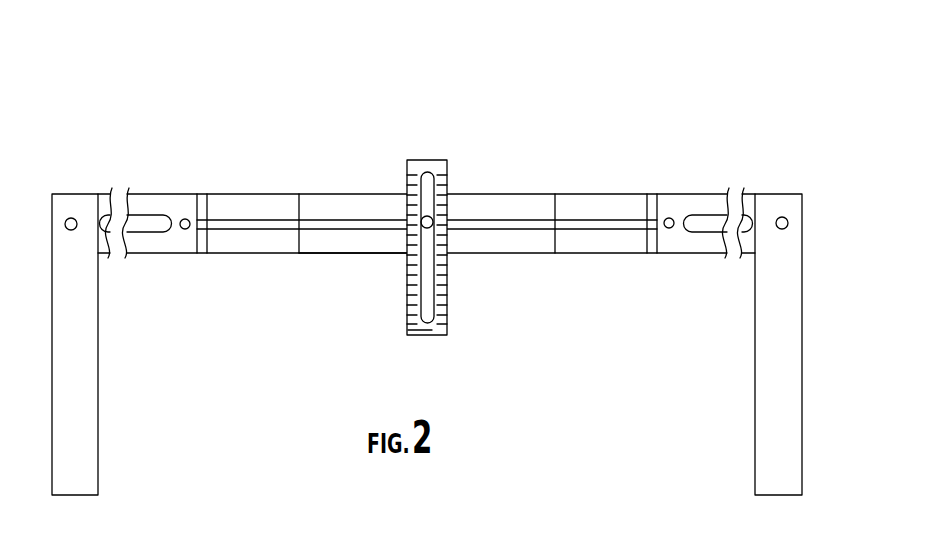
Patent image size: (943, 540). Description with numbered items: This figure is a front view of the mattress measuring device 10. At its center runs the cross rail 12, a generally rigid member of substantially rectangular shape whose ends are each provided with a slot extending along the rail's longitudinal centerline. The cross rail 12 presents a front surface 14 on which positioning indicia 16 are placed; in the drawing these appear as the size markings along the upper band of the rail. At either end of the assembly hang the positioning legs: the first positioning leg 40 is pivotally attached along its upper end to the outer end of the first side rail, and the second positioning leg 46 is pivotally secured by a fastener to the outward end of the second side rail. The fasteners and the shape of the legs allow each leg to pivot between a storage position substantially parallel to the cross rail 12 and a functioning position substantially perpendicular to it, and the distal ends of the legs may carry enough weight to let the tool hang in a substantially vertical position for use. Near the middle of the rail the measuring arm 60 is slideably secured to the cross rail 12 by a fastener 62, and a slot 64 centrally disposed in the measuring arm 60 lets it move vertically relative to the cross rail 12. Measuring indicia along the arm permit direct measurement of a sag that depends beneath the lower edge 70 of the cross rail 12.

The mattress measuring device 10 is at (693, 89).
The cross rail 12 is at (484, 180).
The front surface 14 is at (583, 248).
The positioning indicia 16 is at (330, 192).
The first positioning leg 40 is at (98, 408).
The second positioning leg 46 is at (756, 412).
The measuring arm 60 is at (447, 287).
The fastener 62 is at (427, 216).
The slot 64 is at (434, 316).
The lower edge 70 is at (323, 253).